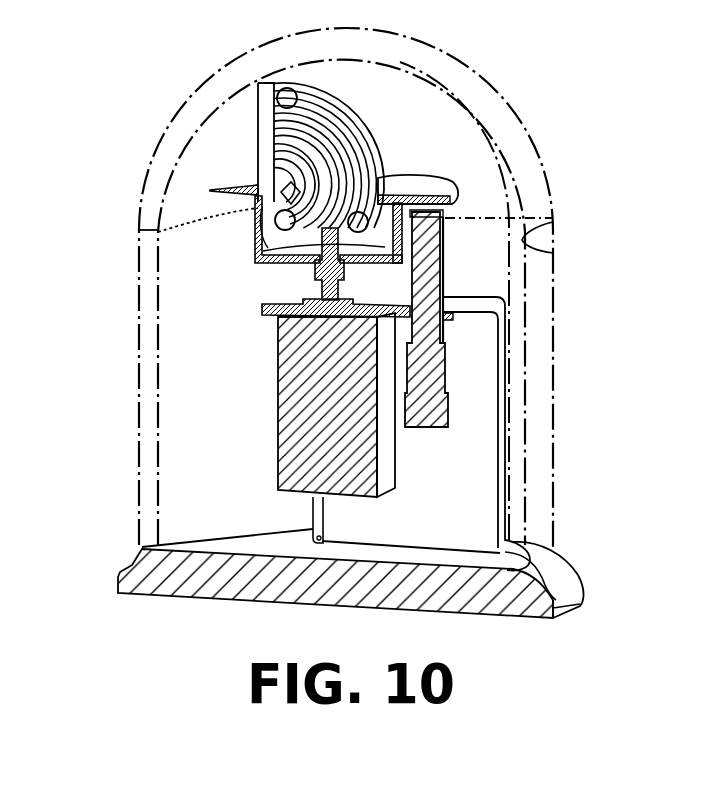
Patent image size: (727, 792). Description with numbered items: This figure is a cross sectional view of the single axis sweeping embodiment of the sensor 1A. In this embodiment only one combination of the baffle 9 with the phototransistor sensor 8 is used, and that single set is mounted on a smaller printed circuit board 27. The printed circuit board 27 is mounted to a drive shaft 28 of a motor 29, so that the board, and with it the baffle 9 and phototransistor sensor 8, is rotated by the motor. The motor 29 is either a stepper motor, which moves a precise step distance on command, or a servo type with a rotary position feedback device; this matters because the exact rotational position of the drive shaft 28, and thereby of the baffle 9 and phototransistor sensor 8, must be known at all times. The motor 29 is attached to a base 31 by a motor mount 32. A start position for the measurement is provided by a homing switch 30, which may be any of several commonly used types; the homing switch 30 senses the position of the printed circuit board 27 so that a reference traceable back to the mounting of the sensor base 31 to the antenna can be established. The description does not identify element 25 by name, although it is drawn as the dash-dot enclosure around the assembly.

The sensor 1A is at (116, 306).
The phototransistor sensor 8 is at (257, 242).
The baffle 9 is at (242, 142).
The bell jar cover 25 is at (134, 467).
The printed circuit board 27 is at (402, 176).
The drive shaft 28 is at (318, 257).
The motor 29 is at (287, 430).
The homing switch 30 is at (443, 287).
The base 31 is at (117, 587).
The motor mount 32 is at (488, 490).